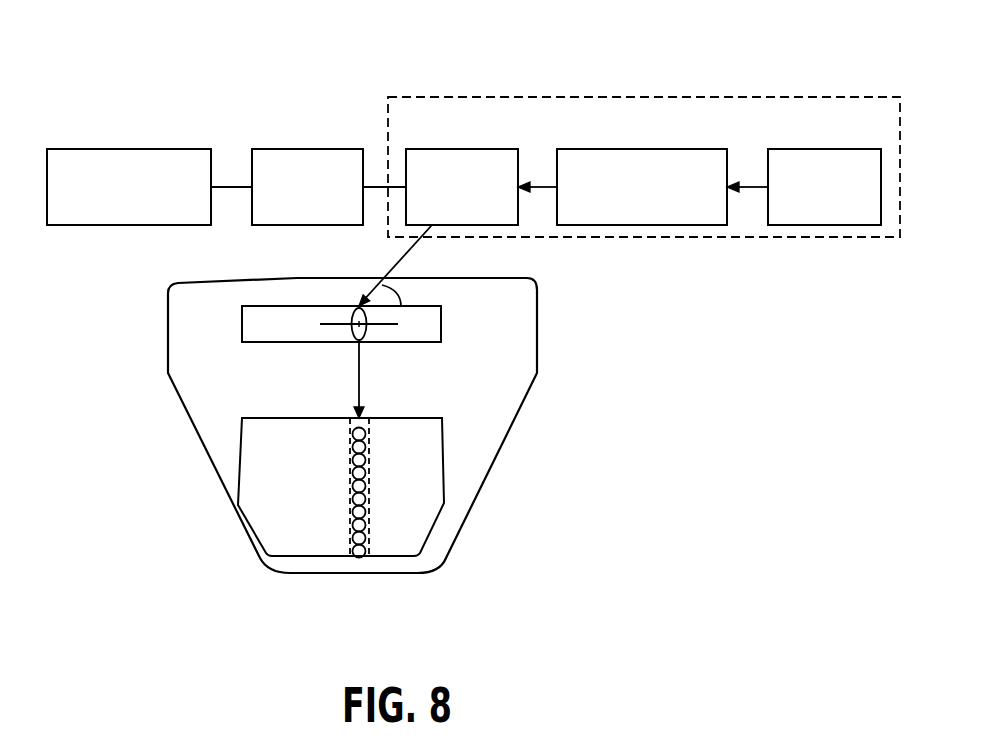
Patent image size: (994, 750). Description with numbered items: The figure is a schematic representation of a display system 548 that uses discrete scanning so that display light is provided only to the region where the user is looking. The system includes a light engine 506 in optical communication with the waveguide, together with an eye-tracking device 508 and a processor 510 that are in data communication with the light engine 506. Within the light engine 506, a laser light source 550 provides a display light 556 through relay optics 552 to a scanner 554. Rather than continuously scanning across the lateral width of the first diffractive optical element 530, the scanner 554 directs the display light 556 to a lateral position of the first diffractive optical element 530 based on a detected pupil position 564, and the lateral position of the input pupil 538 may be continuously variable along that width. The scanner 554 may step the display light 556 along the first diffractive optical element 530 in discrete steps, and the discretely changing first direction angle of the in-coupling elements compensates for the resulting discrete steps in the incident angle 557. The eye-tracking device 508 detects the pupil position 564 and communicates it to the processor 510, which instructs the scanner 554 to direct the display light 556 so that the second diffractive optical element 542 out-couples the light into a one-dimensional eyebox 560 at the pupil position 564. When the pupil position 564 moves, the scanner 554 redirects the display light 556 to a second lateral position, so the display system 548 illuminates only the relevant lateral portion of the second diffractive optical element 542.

The display system 548 is at (340, 78).
The light engine 506 is at (720, 133).
The eye-tracking device 508 is at (180, 211).
The processor 510 is at (325, 211).
The scanner 554 is at (478, 211).
The relay optics 552 is at (658, 211).
The laser light source 550 is at (870, 198).
The display light 556 is at (389, 272).
The incident angle 557 is at (398, 302).
The first diffractive optical element 530 is at (437, 327).
The input pupil 538 is at (362, 341).
The second diffractive optical element 542 is at (443, 428).
The one-dimensional eyebox 560 is at (370, 442).
The pupil position 564 is at (364, 498).